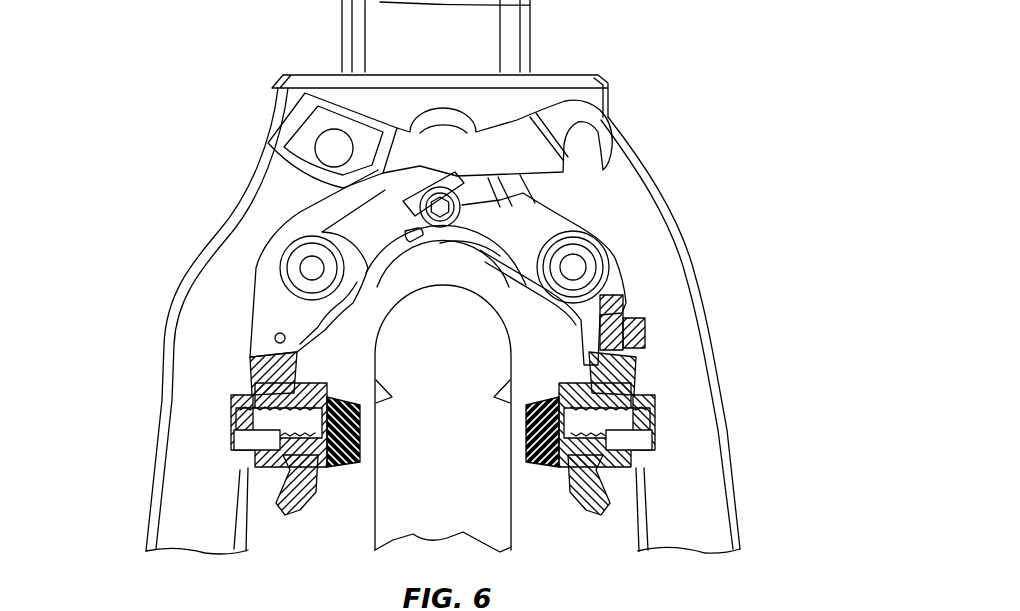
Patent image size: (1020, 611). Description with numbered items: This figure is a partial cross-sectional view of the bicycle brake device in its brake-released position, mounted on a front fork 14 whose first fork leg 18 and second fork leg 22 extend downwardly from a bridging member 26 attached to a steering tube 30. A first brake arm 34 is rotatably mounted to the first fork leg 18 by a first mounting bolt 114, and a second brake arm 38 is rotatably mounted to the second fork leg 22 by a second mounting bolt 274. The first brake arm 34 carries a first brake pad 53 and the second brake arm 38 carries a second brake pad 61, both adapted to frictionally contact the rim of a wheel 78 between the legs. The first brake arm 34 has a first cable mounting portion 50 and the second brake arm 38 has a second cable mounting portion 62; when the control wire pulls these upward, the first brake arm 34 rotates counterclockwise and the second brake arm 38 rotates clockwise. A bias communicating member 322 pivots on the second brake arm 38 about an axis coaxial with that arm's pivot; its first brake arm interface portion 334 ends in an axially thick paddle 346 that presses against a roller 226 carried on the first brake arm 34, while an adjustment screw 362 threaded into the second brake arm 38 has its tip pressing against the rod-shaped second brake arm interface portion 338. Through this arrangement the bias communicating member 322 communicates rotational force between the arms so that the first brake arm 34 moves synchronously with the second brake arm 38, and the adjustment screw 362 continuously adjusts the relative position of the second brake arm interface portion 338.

The front fork 14 is at (423, 277).
The first fork leg 18 is at (162, 388).
The second fork leg 22 is at (731, 408).
The bridging member 26 is at (285, 73).
The steering tube 30 is at (505, 31).
The first brake arm 34 is at (238, 263).
The second brake arm 38 is at (632, 279).
The first cable mounting portion 50 is at (444, 130).
The first brake pad 53 is at (322, 511).
The second brake pad 61 is at (570, 514).
The second cable mounting portion 62 is at (257, 117).
The wheel 78 is at (457, 491).
The first mounting bolt 114 is at (312, 268).
The roller 226 is at (462, 199).
The second mounting bolt 274 is at (573, 267).
The bias communicating member 322 is at (474, 301).
The first brake arm interface portion 334 is at (475, 248).
The second brake arm interface portion 338 is at (583, 337).
The paddle 346 is at (428, 238).
The adjustment screw 362 is at (642, 336).